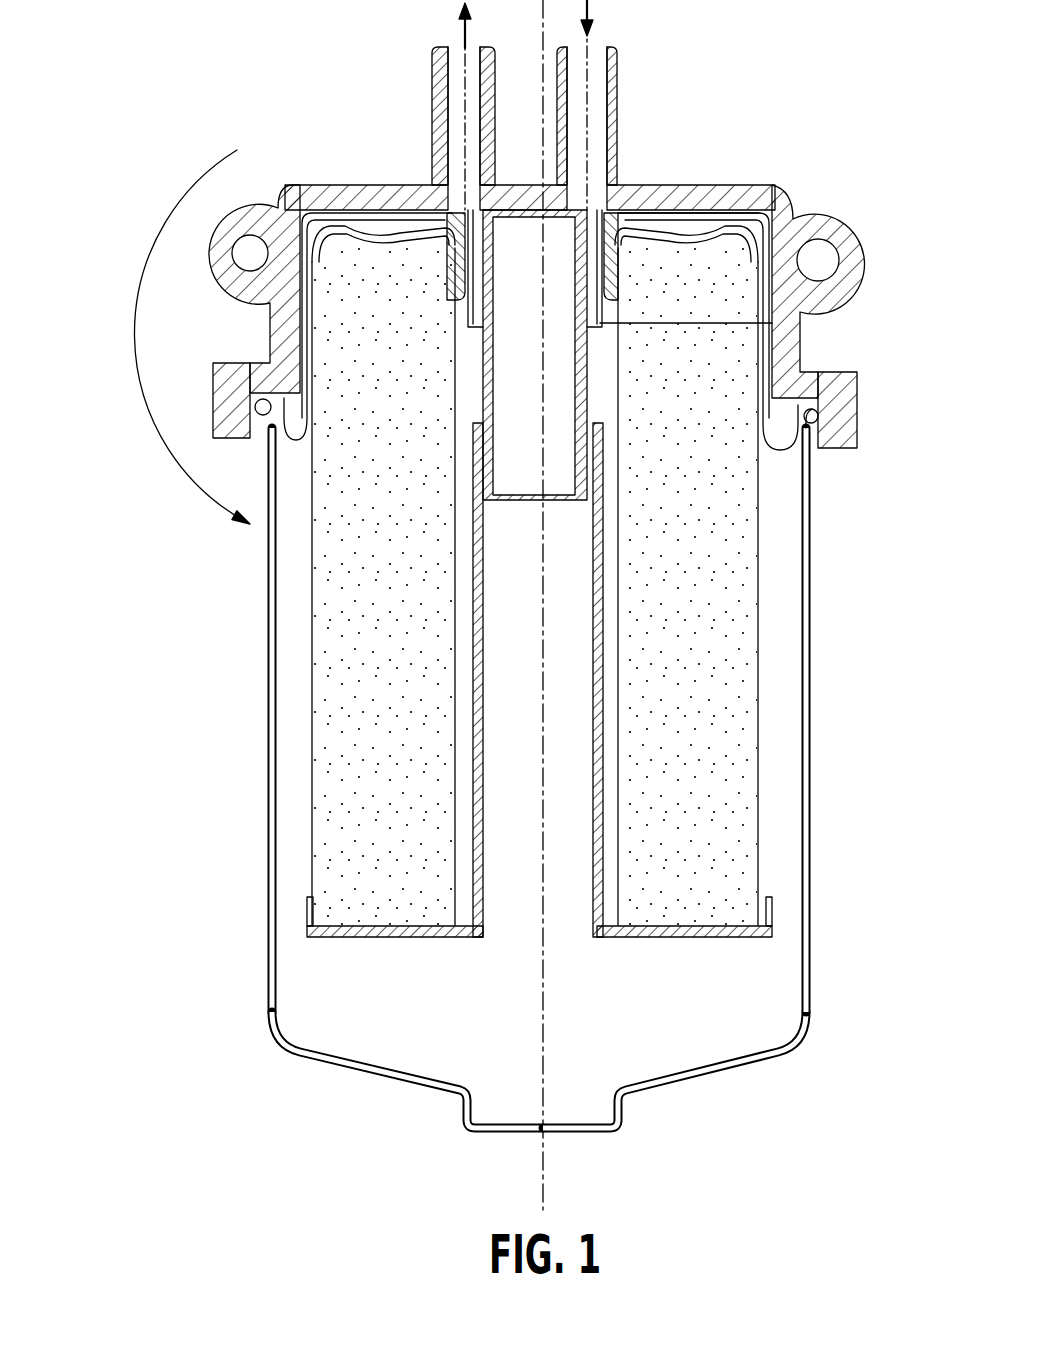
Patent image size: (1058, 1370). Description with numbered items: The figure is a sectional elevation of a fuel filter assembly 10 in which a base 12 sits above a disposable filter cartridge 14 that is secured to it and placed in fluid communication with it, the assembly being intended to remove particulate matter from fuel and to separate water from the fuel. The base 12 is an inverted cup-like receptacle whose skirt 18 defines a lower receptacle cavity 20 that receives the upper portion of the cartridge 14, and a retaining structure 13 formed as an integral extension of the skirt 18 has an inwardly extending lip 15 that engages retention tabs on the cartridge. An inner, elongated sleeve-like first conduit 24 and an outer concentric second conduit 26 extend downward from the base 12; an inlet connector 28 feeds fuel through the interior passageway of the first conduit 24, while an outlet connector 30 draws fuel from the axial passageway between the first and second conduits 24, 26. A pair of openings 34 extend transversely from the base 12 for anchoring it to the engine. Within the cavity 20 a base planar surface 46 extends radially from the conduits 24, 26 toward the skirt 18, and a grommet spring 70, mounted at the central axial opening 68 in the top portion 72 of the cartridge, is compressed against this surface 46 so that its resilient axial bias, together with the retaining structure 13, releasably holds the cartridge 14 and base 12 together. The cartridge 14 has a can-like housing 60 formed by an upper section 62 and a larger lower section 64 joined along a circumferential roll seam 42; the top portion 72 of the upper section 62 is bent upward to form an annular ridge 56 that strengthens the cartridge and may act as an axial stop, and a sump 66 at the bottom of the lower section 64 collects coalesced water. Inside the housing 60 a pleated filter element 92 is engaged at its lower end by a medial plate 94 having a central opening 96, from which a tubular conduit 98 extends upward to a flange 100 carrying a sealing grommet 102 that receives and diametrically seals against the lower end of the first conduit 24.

The filter assembly 10 is at (222, 97).
The base 12 is at (542, 246).
The retaining structure 13 is at (860, 412).
The disposable filter cartridge 14 is at (811, 800).
The lip 15 is at (822, 452).
The skirt 18 is at (790, 350).
The receptacle cavity 20 is at (758, 368).
The first conduit 24 is at (590, 473).
The second conduit 26 is at (772, 323).
The inlet connector 28 is at (618, 62).
The outlet connector 30 is at (435, 60).
The openings 34 is at (817, 258).
The roll seam 42 is at (232, 400).
The base planar surface 46 is at (668, 213).
The annular ridge 56 is at (762, 183).
The housing 60 is at (268, 714).
The upper section 62 is at (310, 292).
The lower section 64 is at (278, 1027).
The sump 66 is at (708, 1048).
The central axial opening 68 is at (622, 213).
The grommet spring 70 is at (448, 230).
The top portion 72 is at (403, 228).
The filter element 92 is at (371, 672).
The medial plate 94 is at (340, 937).
The central opening 96 is at (543, 937).
The tubular conduit 98 is at (483, 905).
The flange 100 is at (593, 418).
The sealing grommet 102 is at (486, 432).